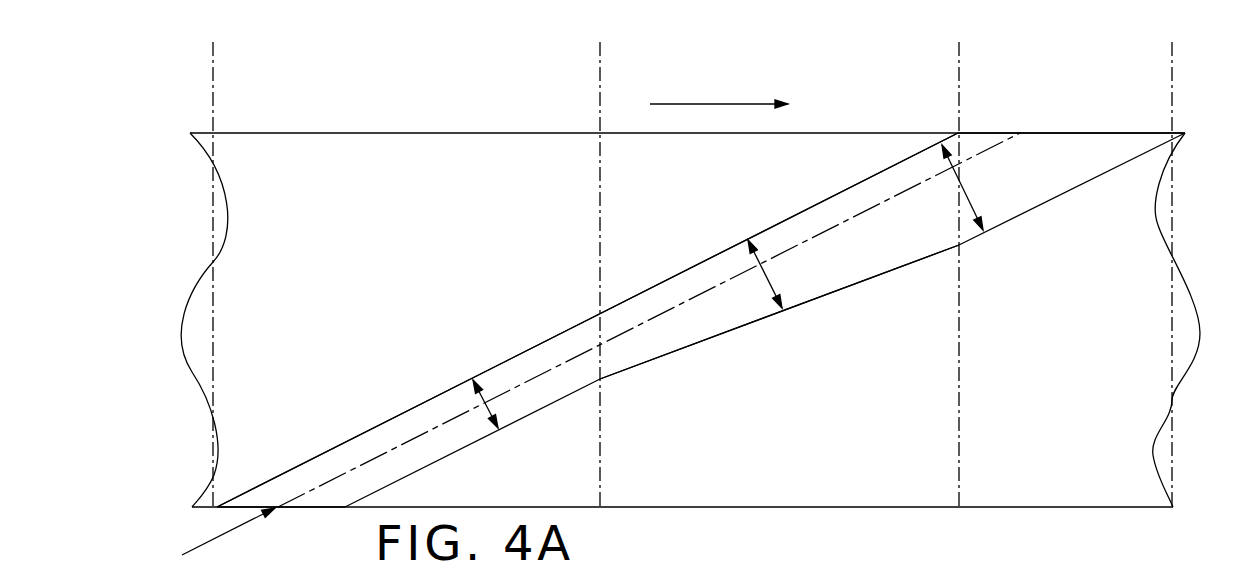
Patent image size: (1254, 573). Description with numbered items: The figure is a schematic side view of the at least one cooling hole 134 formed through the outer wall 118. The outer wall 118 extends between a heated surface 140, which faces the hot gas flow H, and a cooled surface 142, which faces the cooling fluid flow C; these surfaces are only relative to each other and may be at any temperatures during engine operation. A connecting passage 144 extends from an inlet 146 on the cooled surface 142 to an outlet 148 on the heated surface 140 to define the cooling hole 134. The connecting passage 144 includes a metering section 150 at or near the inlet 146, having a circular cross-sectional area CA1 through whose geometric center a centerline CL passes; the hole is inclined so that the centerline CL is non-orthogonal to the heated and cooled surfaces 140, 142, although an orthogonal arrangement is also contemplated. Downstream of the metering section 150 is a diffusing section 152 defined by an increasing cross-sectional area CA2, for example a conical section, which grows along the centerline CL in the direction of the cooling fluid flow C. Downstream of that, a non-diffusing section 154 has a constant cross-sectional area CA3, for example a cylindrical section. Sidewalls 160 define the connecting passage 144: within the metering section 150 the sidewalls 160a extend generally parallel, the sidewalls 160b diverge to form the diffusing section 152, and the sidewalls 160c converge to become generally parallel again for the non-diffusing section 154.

The outer wall 118 is at (293, 265).
The cooling hole 134 is at (668, 280).
The heated surface 140 is at (522, 133).
The cooled surface 142 is at (637, 507).
The connecting passage 144 is at (706, 321).
The inlet 146 is at (313, 507).
The outlet 148 is at (1140, 133).
The metering section 150 is at (597, 42).
The diffusing section 152 is at (957, 42).
The non-diffusing section 154 is at (962, 42).
The sidewalls 160 is at (865, 181).
The sidewalls of metering section 160a is at (390, 419).
The diverging sidewalls 160b is at (700, 342).
The converging sidewalls 160c is at (997, 225).
The centerline CL is at (535, 377).
The cross-sectional area of metering section CA1 is at (470, 400).
The increasing cross-sectional area CA2 is at (770, 285).
The constant cross-sectional area CA3 is at (976, 200).
The hot gas flow H is at (698, 104).
The cooling fluid flow C is at (212, 540).